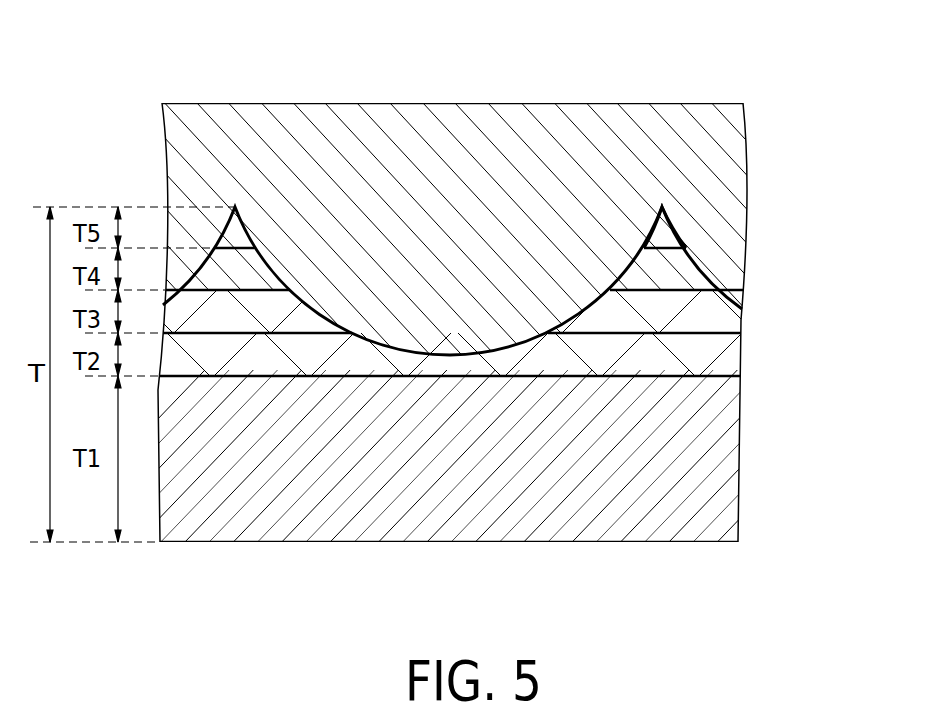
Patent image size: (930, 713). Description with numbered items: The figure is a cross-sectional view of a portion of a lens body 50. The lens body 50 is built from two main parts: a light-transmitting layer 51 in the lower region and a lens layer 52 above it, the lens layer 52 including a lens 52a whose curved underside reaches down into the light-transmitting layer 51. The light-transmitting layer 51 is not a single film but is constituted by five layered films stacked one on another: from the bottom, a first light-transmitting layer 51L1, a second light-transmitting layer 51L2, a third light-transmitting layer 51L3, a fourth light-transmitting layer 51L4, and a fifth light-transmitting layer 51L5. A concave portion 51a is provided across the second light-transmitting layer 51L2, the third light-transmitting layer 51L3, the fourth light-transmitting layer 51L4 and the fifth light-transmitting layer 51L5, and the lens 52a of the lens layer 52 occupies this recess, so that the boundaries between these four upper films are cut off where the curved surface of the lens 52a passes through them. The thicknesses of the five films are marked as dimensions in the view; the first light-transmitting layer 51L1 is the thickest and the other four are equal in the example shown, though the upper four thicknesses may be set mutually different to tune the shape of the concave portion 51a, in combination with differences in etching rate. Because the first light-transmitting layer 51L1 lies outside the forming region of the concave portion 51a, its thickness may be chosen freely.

The lens body 50 is at (465, 312).
The light-transmitting layer 51 is at (472, 379).
The concave portion 51a is at (627, 262).
The first light-transmitting layer 51L1 is at (472, 457).
The second light-transmitting layer 51L2 is at (732, 355).
The third light-transmitting layer 51L3 is at (733, 316).
The fourth light-transmitting layer 51L4 is at (680, 272).
The fifth light-transmitting layer 51L5 is at (667, 232).
The lens layer 52 is at (736, 183).
The lens 52a is at (450, 273).